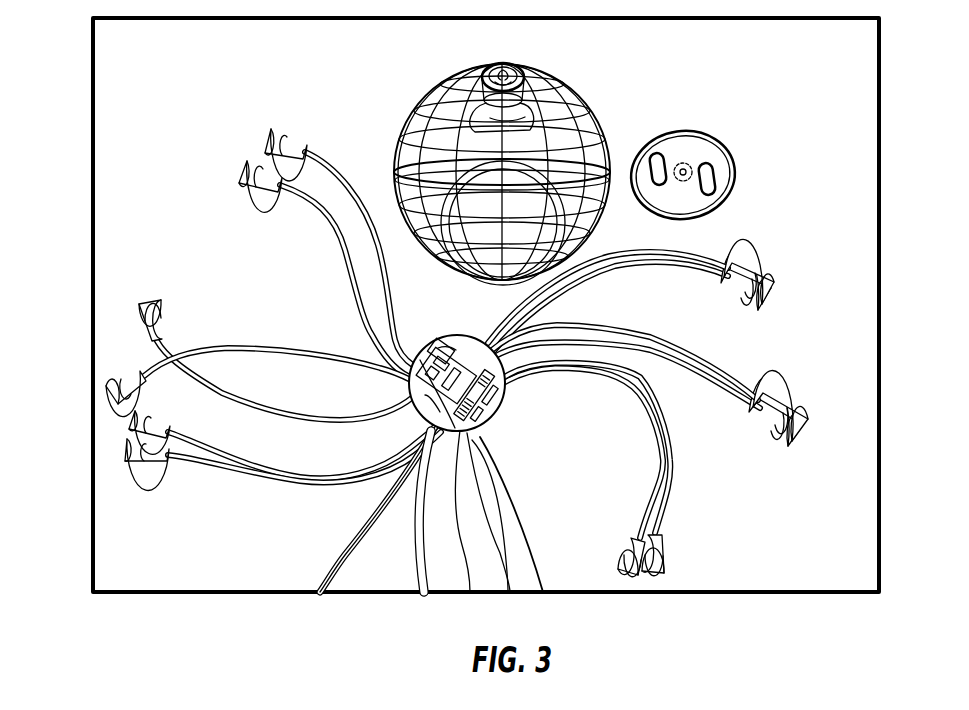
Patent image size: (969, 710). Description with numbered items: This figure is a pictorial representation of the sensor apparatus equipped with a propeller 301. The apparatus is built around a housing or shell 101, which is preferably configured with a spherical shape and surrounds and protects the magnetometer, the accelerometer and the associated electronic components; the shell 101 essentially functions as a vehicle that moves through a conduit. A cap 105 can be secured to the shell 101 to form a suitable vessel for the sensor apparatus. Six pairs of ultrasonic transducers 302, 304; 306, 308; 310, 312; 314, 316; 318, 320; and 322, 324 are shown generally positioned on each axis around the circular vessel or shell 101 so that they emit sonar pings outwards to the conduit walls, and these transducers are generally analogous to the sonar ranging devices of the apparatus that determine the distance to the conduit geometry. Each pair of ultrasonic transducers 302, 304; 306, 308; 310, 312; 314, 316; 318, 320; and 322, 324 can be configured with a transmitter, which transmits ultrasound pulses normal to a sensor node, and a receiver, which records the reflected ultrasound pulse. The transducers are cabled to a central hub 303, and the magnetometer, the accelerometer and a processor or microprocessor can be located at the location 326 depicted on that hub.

The shell 101 is at (542, 78).
The propeller 301 is at (497, 64).
The cap 105 is at (708, 135).
The central hub / circuit board 303 is at (486, 414).
The location 326 is at (466, 316).
The ultrasonic transducer 302 is at (238, 170).
The ultrasonic transducer 304 is at (263, 138).
The ultrasonic transducer 306 is at (766, 275).
The ultrasonic transducer 308 is at (755, 306).
The ultrasonic transducer 310 is at (802, 404).
The ultrasonic transducer 312 is at (786, 440).
The ultrasonic transducer 314 is at (666, 556).
The ultrasonic transducer 316 is at (615, 556).
The ultrasonic transducer 318 is at (135, 458).
The ultrasonic transducer 320 is at (150, 415).
The ultrasonic transducer 322 is at (108, 386).
The ultrasonic transducer 324 is at (165, 312).